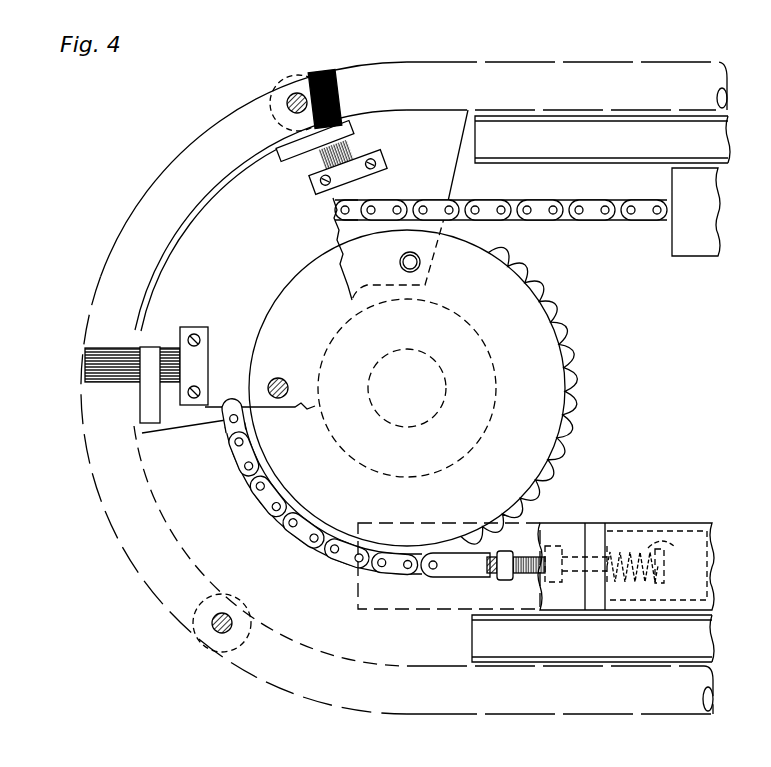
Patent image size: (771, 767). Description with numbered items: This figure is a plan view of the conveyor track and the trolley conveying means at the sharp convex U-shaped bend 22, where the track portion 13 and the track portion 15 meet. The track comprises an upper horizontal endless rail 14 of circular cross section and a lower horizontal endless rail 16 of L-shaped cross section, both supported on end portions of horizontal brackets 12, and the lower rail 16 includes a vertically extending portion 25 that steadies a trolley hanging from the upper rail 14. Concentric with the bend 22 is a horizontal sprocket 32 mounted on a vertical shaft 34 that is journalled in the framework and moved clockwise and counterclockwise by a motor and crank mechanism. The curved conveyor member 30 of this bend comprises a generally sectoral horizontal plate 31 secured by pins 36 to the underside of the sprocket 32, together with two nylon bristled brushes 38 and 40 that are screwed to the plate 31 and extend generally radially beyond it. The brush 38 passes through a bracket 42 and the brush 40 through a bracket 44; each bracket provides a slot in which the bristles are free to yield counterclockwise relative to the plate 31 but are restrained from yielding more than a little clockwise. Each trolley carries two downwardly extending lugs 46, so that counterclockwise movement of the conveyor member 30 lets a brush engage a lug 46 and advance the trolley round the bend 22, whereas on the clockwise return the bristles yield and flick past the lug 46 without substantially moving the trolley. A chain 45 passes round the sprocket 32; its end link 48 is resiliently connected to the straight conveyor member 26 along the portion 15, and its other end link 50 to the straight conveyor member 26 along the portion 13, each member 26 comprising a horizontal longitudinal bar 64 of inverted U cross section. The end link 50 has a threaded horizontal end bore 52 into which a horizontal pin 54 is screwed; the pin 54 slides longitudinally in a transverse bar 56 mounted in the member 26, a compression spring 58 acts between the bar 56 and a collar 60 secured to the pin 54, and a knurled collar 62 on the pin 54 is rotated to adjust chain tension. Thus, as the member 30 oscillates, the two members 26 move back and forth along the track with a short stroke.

The horizontal bracket 12 is at (78, 399).
The track portion 13 is at (547, 725).
The upper horizontal endless rail 14 is at (558, 62).
The track portion 15 is at (683, 38).
The lower horizontal endless rail 16 is at (618, 155).
The sharp convex U-shaped bend 22 is at (108, 537).
The vertically extending portion 25 is at (518, 667).
The straight conveyor member 26 is at (690, 257).
The curved conveyor member 30 is at (404, 142).
The horizontal plate 31 is at (435, 174).
The horizontal sprocket 32 is at (520, 474).
The vertical shaft 34 is at (418, 364).
The pin 36 is at (400, 262).
The nylon bristled brush 38 is at (128, 334).
The nylon bristled brush 40 is at (337, 82).
The bracket 42 is at (150, 350).
The bracket 44 is at (282, 160).
The chain 45 is at (266, 502).
The downwardly extending lug 46 is at (289, 105).
The end link 48 is at (668, 204).
The end link 50 is at (448, 573).
The threaded horizontal end bore 52 is at (498, 576).
The horizontal pin 54 is at (525, 576).
The transverse bar 56 is at (609, 542).
The compression spring 58 is at (641, 552).
The collar 60 is at (670, 547).
The knurled collar 62 is at (560, 556).
The horizontal longitudinal bar 64 is at (710, 219).